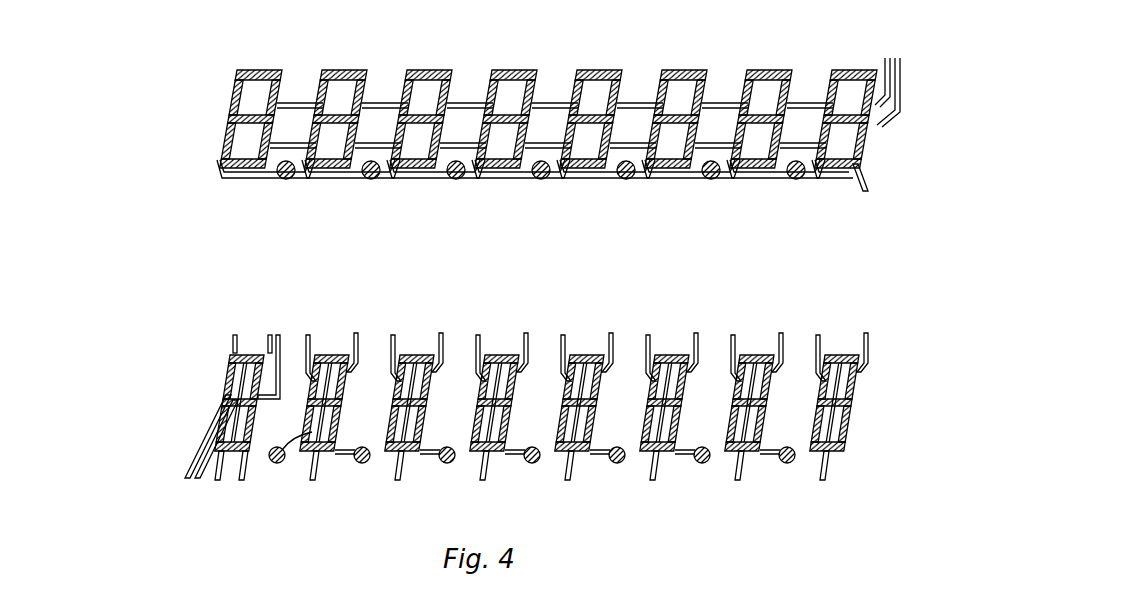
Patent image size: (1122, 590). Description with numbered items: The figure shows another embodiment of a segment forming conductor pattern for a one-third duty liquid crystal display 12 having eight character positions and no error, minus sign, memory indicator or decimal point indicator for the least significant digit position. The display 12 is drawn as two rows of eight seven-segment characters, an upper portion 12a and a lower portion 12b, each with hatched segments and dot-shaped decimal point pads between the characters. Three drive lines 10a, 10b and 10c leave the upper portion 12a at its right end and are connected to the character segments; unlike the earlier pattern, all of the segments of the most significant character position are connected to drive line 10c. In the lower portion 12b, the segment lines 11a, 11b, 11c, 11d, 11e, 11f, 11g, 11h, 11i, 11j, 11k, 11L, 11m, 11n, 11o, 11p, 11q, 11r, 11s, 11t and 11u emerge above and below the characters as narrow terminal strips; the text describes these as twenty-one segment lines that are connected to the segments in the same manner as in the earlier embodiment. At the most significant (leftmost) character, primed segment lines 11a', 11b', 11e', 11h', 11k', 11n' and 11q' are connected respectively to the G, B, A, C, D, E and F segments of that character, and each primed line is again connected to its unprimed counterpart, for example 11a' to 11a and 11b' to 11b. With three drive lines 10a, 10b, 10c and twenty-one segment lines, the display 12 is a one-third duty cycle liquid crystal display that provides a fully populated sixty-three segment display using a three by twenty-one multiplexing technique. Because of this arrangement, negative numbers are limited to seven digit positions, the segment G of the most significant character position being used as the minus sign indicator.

The liquid crystal display 12 is at (149, 279).
The front electrode plate of display 12a is at (155, 131).
The rear electrode plate of display 12b is at (163, 408).
The drive line 10a is at (885, 58).
The drive line 10b is at (900, 58).
The drive line 10c is at (862, 192).
The segment line 11a is at (884, 310).
The segment line 11b is at (836, 332).
The segment line 11c is at (823, 480).
The segment line 11d is at (785, 333).
The segment line 11e is at (750, 332).
The segment line 11f is at (738, 480).
The segment line 11g is at (700, 333).
The segment line 11h is at (665, 332).
The segment line 11i is at (653, 480).
The segment line 11j is at (615, 333).
The segment line 11k is at (580, 332).
The segment line 11L is at (568, 480).
The segment line 11m is at (530, 333).
The segment line 11n is at (494, 332).
The segment line 11o is at (483, 480).
The segment line 11p is at (445, 333).
The segment line 11q is at (409, 332).
The segment line 11r is at (398, 480).
The segment line 11s is at (360, 333).
The segment line 11t is at (309, 335).
The segment lead 11u is at (313, 480).
The segment line 11a' is at (294, 324).
The segment line 11b' is at (271, 301).
The segment line 11e' is at (244, 318).
The segment line 11h' is at (255, 501).
The segment line 11k' is at (226, 487).
The segment line 11n' is at (209, 476).
The segment line 11q' is at (195, 459).